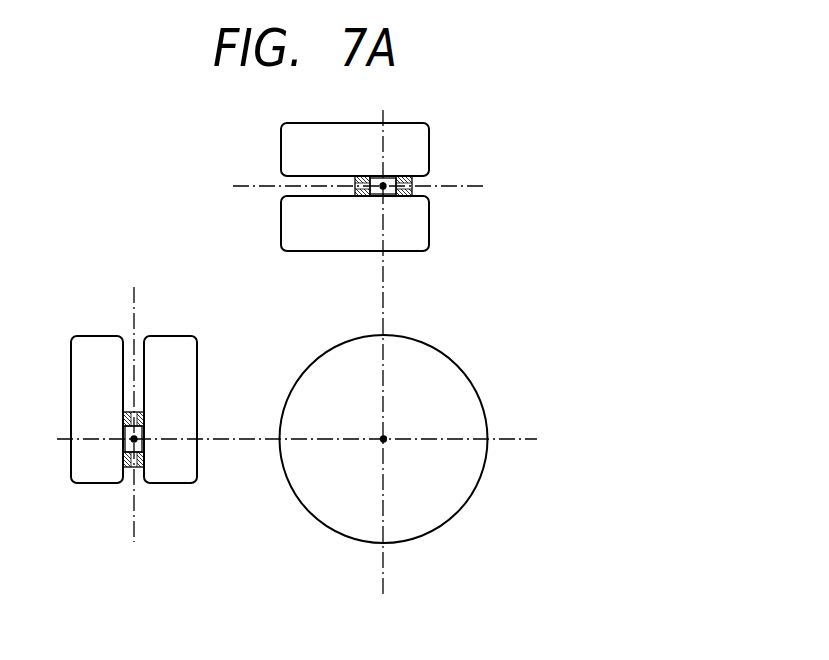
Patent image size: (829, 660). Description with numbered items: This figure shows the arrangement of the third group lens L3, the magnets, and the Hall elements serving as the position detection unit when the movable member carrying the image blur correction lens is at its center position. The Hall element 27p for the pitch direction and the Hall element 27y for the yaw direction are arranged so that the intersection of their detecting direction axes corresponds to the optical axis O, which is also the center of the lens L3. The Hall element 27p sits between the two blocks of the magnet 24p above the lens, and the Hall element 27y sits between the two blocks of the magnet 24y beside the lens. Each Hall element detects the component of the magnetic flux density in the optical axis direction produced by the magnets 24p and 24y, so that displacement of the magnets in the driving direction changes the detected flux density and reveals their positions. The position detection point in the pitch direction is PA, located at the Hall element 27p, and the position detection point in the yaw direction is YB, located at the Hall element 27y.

The magnet in the pitch direction 24p is at (290, 136).
The Hall element in the pitch direction 27p is at (412, 191).
The position detection point in the pitch direction PA is at (385, 184).
The magnet in the yaw direction 24y is at (98, 340).
The Hall element in the yaw direction 27y is at (138, 468).
The position detection point in the yaw direction YB is at (132, 442).
The third group lens L3 is at (425, 520).
The optical axis O is at (395, 454).